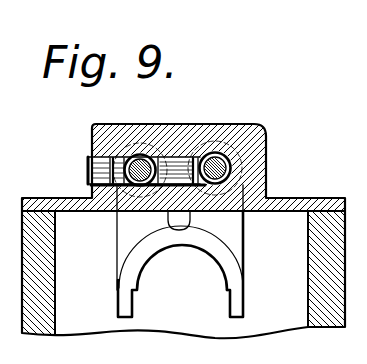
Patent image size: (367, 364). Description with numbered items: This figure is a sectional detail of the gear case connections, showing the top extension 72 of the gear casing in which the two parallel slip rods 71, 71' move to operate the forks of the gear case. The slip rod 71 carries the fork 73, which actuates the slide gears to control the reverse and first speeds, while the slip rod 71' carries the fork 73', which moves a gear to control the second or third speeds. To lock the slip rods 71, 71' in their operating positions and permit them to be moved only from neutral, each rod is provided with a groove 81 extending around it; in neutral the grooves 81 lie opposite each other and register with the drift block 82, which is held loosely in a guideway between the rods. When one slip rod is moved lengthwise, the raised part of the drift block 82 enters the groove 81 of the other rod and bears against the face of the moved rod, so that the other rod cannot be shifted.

The top extension 72 is at (248, 124).
The slip rod 71 is at (140, 191).
The slip rod 71' is at (252, 165).
The groove 81 is at (134, 158).
The drift block 82 is at (178, 157).
The fork 73 is at (155, 271).
The fork 73' is at (257, 264).